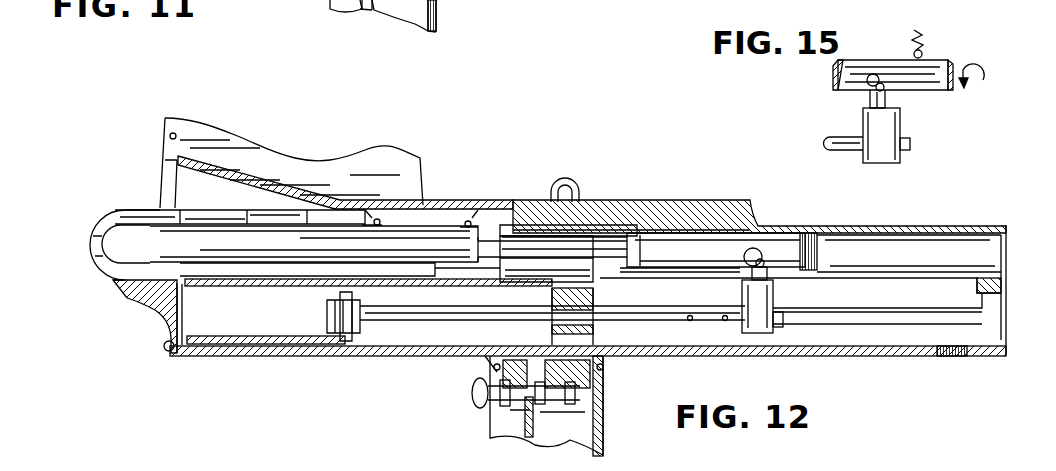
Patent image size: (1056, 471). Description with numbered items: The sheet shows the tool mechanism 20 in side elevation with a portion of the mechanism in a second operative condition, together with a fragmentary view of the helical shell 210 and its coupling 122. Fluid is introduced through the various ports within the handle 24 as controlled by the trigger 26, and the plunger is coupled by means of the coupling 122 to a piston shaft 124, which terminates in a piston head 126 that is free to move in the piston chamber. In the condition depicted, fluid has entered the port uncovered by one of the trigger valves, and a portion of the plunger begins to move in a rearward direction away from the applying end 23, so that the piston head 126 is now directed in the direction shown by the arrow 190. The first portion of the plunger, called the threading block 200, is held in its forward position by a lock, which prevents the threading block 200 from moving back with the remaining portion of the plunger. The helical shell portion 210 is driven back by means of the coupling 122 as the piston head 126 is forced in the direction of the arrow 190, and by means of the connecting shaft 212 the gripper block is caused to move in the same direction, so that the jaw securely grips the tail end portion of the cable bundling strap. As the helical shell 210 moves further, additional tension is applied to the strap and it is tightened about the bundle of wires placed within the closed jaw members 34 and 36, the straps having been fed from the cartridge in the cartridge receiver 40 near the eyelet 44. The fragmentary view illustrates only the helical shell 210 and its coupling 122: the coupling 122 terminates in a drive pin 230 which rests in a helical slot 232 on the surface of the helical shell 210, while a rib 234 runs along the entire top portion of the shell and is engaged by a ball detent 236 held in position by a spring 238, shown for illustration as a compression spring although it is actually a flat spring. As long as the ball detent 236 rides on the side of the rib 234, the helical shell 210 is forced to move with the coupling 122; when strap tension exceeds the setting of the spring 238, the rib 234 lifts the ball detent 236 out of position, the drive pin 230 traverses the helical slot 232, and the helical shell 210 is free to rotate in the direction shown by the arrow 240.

In FIG. 12, the firearm mechanism assembly 20 is at (683, 145).
In FIG. 12, the applying end 23 is at (223, 357).
In FIG. 12, the handle 24 is at (603, 412).
In FIG. 12, the trigger 26 is at (473, 400).
In FIG. 12, the jaw member 34 is at (104, 268).
In FIG. 12, the movable jaw member 36 is at (113, 212).
In FIG. 12, the cartridge receiver 40 is at (332, 188).
In FIG. 12, the ring eyelet 44 is at (551, 190).
In FIG. 12, the coupling 122 is at (779, 316).
In FIG. 15, the coupling 122 is at (898, 164).
In FIG. 12, the piston shaft 124 is at (420, 318).
In FIG. 15, the piston shaft 124 is at (826, 146).
In FIG. 12, the piston head 126 is at (353, 347).
In FIG. 12, the arrow 190 is at (300, 310).
In FIG. 12, the threading block 200 is at (314, 244).
In FIG. 12, the helical shell 210 is at (814, 252).
In FIG. 15, the helical shell 210 is at (840, 76).
In FIG. 12, the connecting shaft 212 is at (578, 240).
In FIG. 15, the drive pin 230 is at (892, 88).
In FIG. 15, the helical slot 232 is at (869, 97).
In FIG. 15, the rib 234 is at (875, 60).
In FIG. 15, the ball detent 236 is at (925, 56).
In FIG. 15, the spring 238 is at (921, 44).
In FIG. 15, the arrow 240 is at (985, 70).